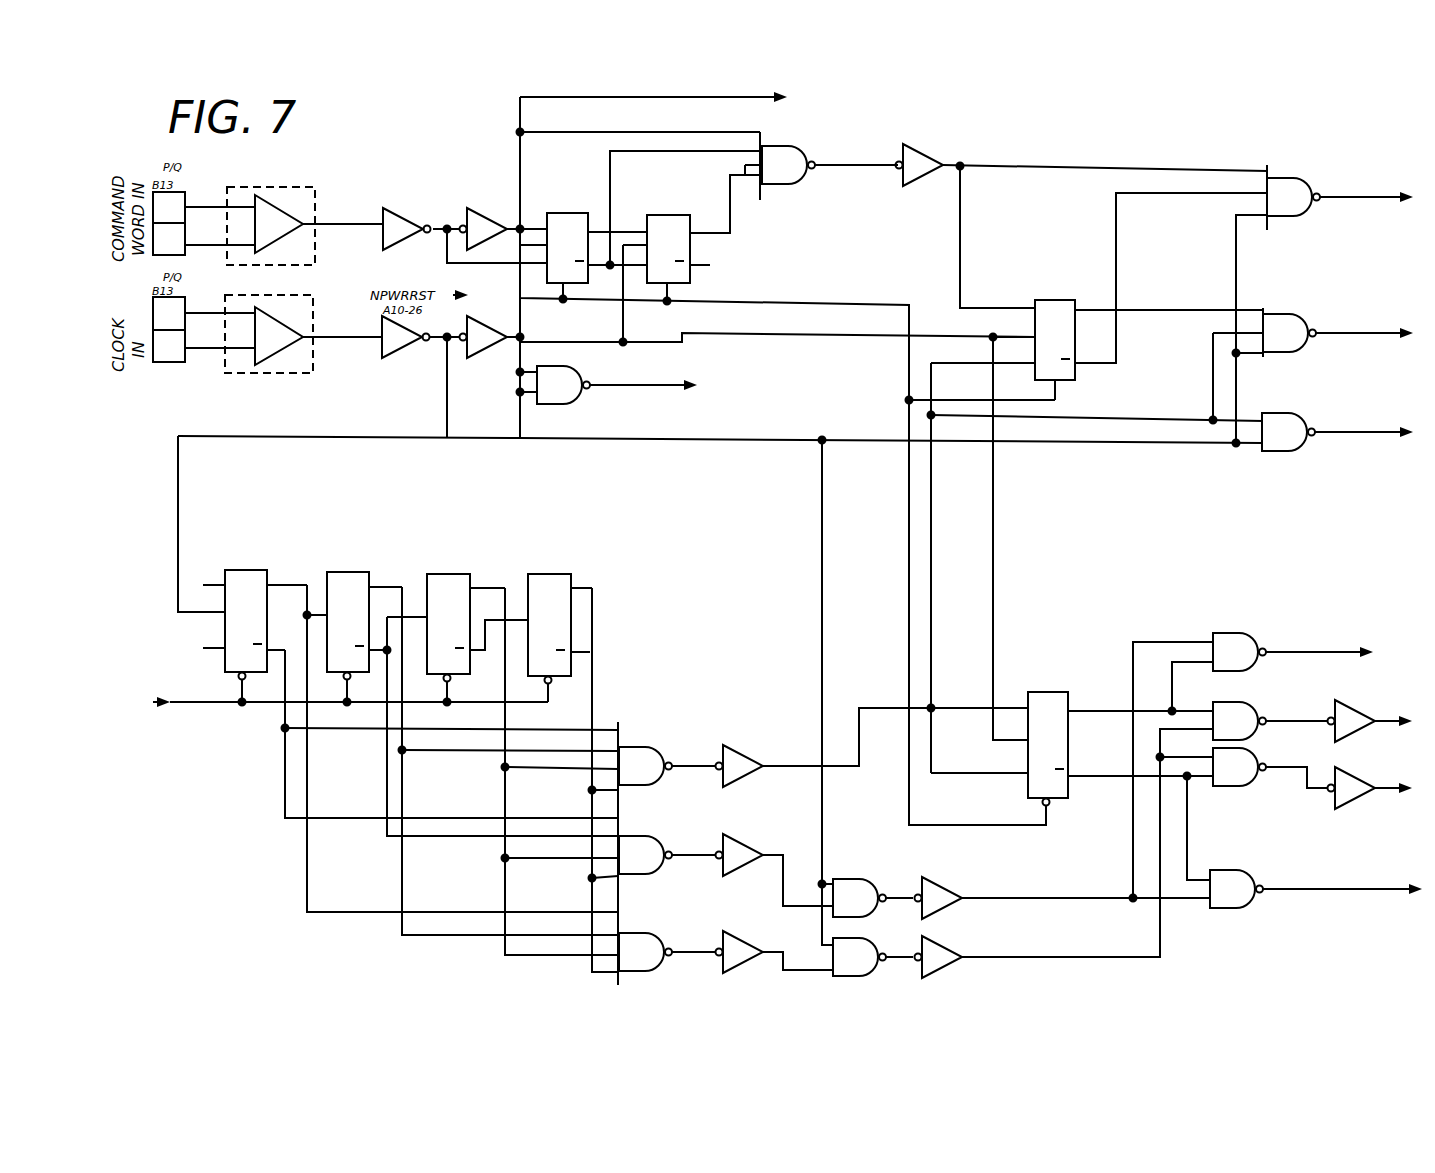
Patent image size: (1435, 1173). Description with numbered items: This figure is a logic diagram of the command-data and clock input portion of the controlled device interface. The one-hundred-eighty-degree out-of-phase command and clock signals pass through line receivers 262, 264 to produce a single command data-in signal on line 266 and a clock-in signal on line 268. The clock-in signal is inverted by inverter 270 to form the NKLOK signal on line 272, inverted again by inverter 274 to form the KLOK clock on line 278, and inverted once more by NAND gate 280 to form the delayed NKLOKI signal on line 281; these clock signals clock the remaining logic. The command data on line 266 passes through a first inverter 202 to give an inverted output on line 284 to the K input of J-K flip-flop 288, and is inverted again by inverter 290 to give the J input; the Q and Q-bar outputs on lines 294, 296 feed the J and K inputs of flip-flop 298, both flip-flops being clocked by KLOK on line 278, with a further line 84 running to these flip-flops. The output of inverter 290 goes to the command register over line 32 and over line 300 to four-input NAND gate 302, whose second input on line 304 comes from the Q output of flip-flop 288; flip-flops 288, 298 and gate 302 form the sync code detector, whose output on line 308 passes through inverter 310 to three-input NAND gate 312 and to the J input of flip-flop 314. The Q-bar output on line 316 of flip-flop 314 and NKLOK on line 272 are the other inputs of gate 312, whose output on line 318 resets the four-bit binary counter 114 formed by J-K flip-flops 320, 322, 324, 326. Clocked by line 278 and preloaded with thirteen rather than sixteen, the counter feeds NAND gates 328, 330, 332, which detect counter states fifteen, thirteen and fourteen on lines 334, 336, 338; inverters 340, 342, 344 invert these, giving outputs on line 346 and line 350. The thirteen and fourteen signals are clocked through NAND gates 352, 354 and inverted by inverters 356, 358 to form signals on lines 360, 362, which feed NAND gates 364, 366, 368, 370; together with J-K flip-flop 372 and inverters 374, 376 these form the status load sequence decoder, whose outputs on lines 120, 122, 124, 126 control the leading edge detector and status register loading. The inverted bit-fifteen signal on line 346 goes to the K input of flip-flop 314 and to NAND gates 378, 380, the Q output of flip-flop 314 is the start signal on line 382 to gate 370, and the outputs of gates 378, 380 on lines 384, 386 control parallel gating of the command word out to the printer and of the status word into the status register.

The line receiver 262 is at (291, 186).
The line receiver 264 is at (313, 307).
The command data-in line 266 is at (328, 215).
The inverter 202 is at (410, 208).
The inverter 290 is at (490, 208).
The inverted data output line 284 is at (445, 256).
The clock-in line 268 is at (341, 332).
The inverter 270 is at (388, 358).
The NKLOK line 272 is at (438, 348).
The inverter 274 is at (480, 318).
The KLOK clock line 278 is at (537, 342).
The NAND gate 280 is at (588, 373).
The NKLOKI line 281 is at (686, 380).
The J-K flip-flop 288 is at (583, 212).
The Q output line 294 is at (617, 228).
The Q-bar output line 296 is at (627, 268).
The flip-flop 298 is at (682, 208).
The input line 300 is at (630, 135).
The input line 304 is at (650, 152).
The command register line 32 is at (700, 97).
The four input NAND gate 302 is at (798, 148).
The sync code detector output line 308 is at (872, 150).
The inverter 310 is at (935, 148).
The three-input NAND gate 312 is at (1298, 178).
The reset signal line 318 is at (1333, 192).
The flip-flop 314 is at (1060, 300).
The Q-bar output line 316 is at (1118, 240).
The start signal line 382 is at (1128, 310).
The NAND gate 378 is at (1296, 314).
The output line 384 is at (1335, 330).
The NAND gate 380 is at (1280, 414).
The output line 386 is at (1330, 430).
The reset line 84 is at (787, 534).
The four-bit binary counter 114 is at (416, 584).
The J-K flip-flop 320 is at (243, 568).
The J-K flip-flop 322 is at (340, 570).
The J-K flip-flop 324 is at (443, 572).
The J-K flip-flop 326 is at (553, 572).
The NAND gate 328 is at (640, 746).
The NAND gate 330 is at (638, 836).
The NAND gate 332 is at (640, 933).
The counter state fifteen line 334 is at (688, 760).
The counter state thirteen line 336 is at (687, 850).
The counter state fourteen line 338 is at (688, 946).
The inverter 340 is at (745, 746).
The inverter 342 is at (743, 836).
The inverter 344 is at (743, 933).
The inverted bit fifteen detected line 346 is at (832, 768).
The output line 350 is at (780, 958).
The NAND gate 352 is at (860, 879).
The NAND gate 354 is at (862, 946).
The inverter 356 is at (952, 878).
The inverter 358 is at (951, 952).
The signal line 360 is at (1097, 895).
The signal line 362 is at (1112, 960).
The NAND gate 364 is at (1250, 633).
The NAND gate 366 is at (1252, 712).
The NAND gate 368 is at (1262, 752).
The NAND gate 370 is at (1247, 870).
The J-K flip-flop 372 is at (1052, 692).
The inverter 374 is at (1350, 703).
The inverter 376 is at (1356, 780).
The decoder output line 120 is at (1366, 650).
The decoder output line 122 is at (1383, 718).
The decoder output line 124 is at (1386, 786).
The decoder output line 126 is at (1380, 886).